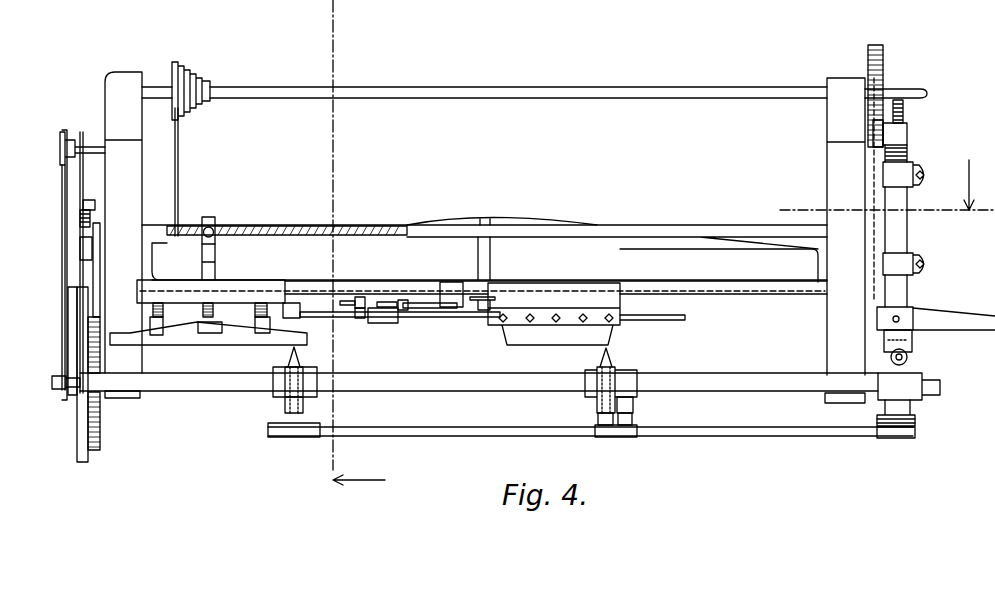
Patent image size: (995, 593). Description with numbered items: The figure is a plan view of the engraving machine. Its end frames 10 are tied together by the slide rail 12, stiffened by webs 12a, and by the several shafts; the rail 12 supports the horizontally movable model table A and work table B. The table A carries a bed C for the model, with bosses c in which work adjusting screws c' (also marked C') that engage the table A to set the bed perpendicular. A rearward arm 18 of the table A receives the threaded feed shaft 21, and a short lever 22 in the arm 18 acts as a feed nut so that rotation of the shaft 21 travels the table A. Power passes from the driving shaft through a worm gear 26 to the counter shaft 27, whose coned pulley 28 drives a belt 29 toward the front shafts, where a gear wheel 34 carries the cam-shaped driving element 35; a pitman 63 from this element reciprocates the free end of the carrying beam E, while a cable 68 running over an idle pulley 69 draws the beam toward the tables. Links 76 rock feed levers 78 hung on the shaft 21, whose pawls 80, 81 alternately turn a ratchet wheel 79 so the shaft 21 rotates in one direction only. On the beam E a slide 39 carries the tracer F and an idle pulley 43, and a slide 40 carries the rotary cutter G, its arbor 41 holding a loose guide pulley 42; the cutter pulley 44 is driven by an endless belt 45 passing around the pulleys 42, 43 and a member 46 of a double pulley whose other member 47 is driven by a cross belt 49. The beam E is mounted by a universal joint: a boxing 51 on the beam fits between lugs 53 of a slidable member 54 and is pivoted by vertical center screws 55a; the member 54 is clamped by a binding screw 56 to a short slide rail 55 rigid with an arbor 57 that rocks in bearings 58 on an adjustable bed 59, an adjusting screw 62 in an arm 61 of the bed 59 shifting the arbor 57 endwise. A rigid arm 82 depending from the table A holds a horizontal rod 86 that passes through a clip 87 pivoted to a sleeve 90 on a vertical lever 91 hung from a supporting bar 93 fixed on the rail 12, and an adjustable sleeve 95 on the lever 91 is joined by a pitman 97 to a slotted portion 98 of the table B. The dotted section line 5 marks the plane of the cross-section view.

The end frame 10 is at (141, 166).
The longitudinal counter shaft 27 is at (490, 90).
The stepped or coned pulley 28 is at (195, 78).
The belt 29 is at (179, 190).
The worm gear 26 is at (884, 80).
The adjusting screw 62 is at (905, 112).
The arm 61 is at (908, 130).
The adjustable bed plate 59 is at (878, 138).
The clamp bearing 58 is at (915, 166).
The arbor 57 is at (908, 232).
The binding screw 56 is at (880, 322).
The slidable member 54 is at (925, 312).
The lugs 53 is at (889, 344).
The center screws 55a is at (908, 355).
The short slide rail 55 is at (990, 331).
The boxing 51 is at (925, 380).
The cross belt 49 is at (877, 421).
The double pulley member 47 is at (916, 420).
The double pulley member 46 is at (906, 440).
The endless driving belt 45 is at (520, 437).
The idle pulley 43 is at (285, 438).
The tracer slide 39 is at (280, 385).
The tracer F is at (300, 365).
The cutter slide 40 is at (638, 380).
The cutter G is at (612, 362).
The arbor 41 is at (636, 406).
The guide pulley 42 is at (636, 438).
The cutter pulley 44 is at (608, 438).
The carrying beam E is at (470, 378).
The feed shaft 21 is at (625, 226).
The webs 12a is at (500, 220).
The short lever 22 is at (212, 222).
The rearwardly extending arm 18 is at (202, 262).
The model table A is at (232, 280).
The slide rail 12 is at (355, 282).
The rigid arm 82 is at (290, 303).
The horizontal rod 86 is at (430, 318).
The vertical lever 91 is at (366, 300).
The sleeve 90 is at (360, 318).
The clip 87 is at (385, 323).
The adjustable sleeve 95 is at (400, 310).
The pitman 97 is at (445, 310).
The vertical supporting bar 93 is at (453, 282).
The slotted portion 98 is at (492, 296).
The work table B is at (570, 283).
The adjusting screw c' is at (191, 312).
The adjusting screw C' is at (225, 312).
The bosses c is at (210, 341).
The workbed C is at (208, 342).
The idle pulley 69 is at (70, 130).
The feed levers 78 is at (80, 188).
The pawl 81 is at (95, 205).
The ratchet wheel 79 is at (80, 218).
The cable 68 is at (62, 245).
The pawl 80 is at (80, 255).
The links 76 is at (100, 262).
The pitman 63 is at (68, 330).
The driving element 35 is at (80, 455).
The gear wheel 34 is at (100, 425).
The section line 5 is at (356, 256).